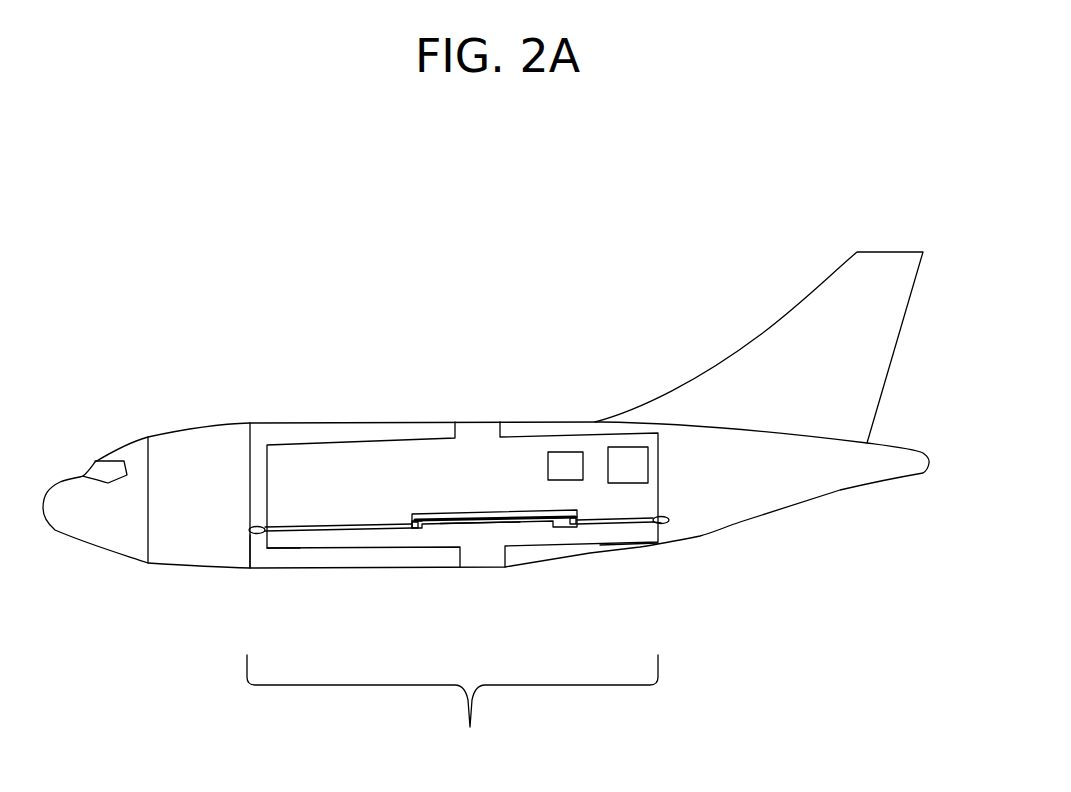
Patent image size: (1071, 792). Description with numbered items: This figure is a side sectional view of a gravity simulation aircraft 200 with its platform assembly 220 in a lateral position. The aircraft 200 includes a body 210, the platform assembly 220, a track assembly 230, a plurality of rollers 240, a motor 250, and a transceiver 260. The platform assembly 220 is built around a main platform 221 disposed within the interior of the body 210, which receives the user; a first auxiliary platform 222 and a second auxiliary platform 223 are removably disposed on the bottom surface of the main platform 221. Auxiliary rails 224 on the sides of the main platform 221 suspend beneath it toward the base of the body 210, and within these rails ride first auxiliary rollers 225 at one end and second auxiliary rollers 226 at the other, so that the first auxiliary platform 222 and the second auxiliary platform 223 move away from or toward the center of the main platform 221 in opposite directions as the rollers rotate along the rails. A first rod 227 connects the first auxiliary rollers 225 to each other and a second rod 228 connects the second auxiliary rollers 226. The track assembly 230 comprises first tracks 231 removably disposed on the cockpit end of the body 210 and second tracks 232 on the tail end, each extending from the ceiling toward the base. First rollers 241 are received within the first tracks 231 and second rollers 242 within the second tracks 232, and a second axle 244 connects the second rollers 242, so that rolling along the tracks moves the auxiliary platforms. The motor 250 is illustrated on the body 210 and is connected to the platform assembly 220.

The gravity simulation aircraft 200 is at (222, 340).
The body 210 is at (469, 409).
The platform assembly 220 is at (441, 497).
The main platform 221 is at (511, 513).
The first auxiliary platform 222 is at (332, 531).
The second auxiliary platform 223 is at (612, 526).
The auxiliary rails 224 is at (478, 533).
The first auxiliary rollers 225 is at (418, 531).
The second auxiliary rollers 226 is at (563, 529).
The first rod 227 is at (410, 528).
The second rod 228 is at (572, 529).
The track assembly 230 is at (452, 708).
The first tracks 231 is at (248, 535).
The second tracks 232 is at (630, 546).
The rollers 240 is at (221, 527).
The first rollers 241 is at (260, 535).
The second rollers 242 is at (670, 519).
The second axle 244 is at (662, 524).
The motor 250 is at (568, 452).
The transceiver 260 is at (626, 447).